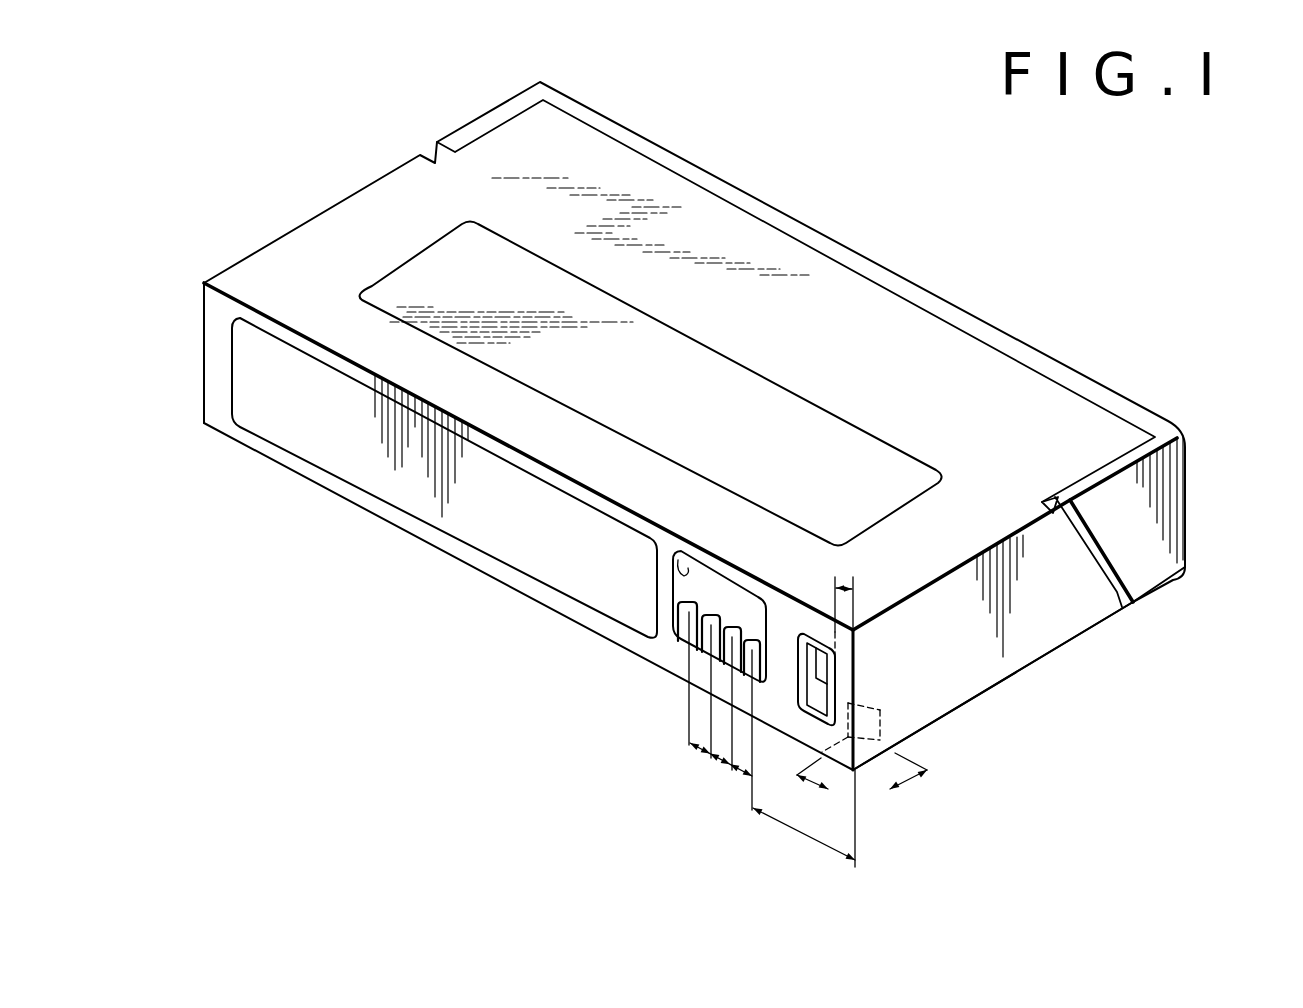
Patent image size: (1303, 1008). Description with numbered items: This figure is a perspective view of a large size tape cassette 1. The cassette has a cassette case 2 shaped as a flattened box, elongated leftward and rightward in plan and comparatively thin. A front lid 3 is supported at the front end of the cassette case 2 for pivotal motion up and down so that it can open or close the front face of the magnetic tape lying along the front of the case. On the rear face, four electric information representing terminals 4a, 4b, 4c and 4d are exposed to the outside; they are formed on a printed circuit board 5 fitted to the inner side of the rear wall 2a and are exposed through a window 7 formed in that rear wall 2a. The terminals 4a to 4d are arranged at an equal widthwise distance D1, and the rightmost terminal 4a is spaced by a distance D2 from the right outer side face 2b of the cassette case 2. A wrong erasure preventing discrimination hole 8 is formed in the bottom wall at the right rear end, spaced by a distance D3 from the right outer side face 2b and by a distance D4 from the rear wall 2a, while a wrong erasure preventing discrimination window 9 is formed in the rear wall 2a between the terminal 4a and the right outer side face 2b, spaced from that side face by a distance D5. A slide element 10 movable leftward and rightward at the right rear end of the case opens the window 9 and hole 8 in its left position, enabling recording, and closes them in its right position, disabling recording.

The large size tape cassette 1 is at (1074, 224).
The cassette case 2 is at (1050, 640).
The rear wall 2a is at (506, 543).
The right outer side face 2b is at (1083, 615).
The front lid 3 is at (1177, 472).
The electric information representing terminal 4a is at (747, 637).
The electric information representing terminal 4b is at (728, 630).
The electric information representing terminal 4c is at (710, 616).
The electric information representing terminal 4d is at (681, 617).
The printed circuit board 5 is at (723, 587).
The window 7 is at (681, 557).
The wrong erasure preventing discrimination hole 8 is at (858, 707).
The wrong erasure preventing discrimination window 9 is at (803, 630).
The slide element 10 is at (822, 637).
The distance D1 is at (700, 752).
The distance D2 is at (810, 836).
The distance D3 is at (798, 778).
The distance D4 is at (910, 780).
The distance D5 is at (849, 584).